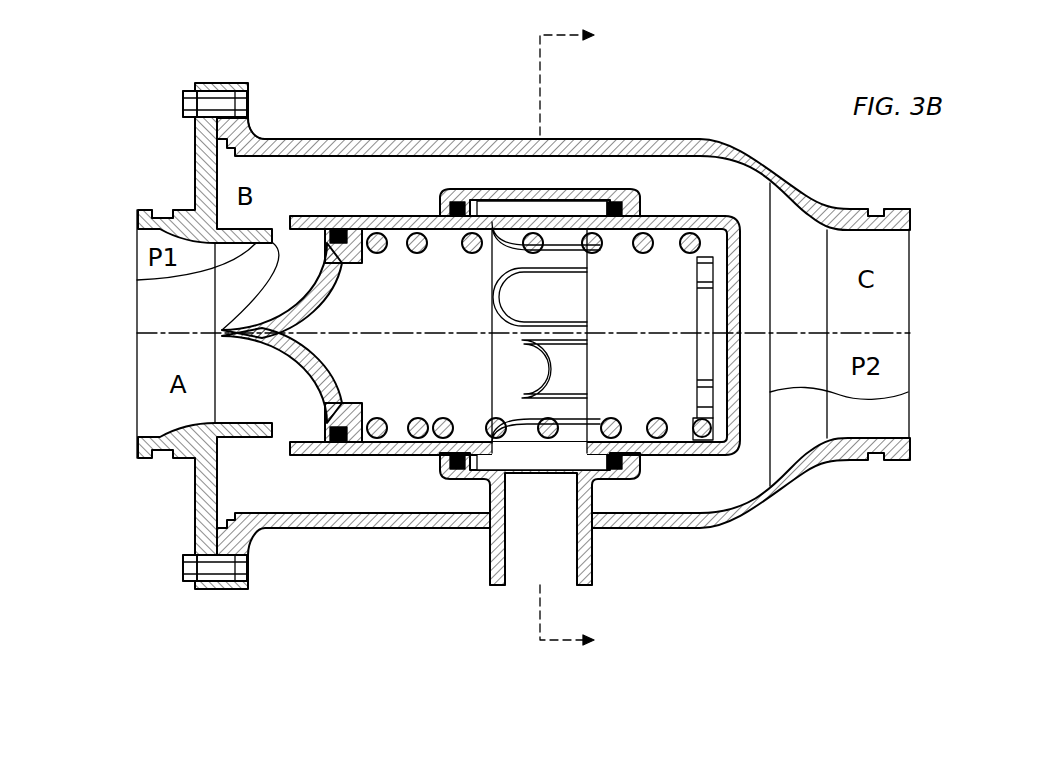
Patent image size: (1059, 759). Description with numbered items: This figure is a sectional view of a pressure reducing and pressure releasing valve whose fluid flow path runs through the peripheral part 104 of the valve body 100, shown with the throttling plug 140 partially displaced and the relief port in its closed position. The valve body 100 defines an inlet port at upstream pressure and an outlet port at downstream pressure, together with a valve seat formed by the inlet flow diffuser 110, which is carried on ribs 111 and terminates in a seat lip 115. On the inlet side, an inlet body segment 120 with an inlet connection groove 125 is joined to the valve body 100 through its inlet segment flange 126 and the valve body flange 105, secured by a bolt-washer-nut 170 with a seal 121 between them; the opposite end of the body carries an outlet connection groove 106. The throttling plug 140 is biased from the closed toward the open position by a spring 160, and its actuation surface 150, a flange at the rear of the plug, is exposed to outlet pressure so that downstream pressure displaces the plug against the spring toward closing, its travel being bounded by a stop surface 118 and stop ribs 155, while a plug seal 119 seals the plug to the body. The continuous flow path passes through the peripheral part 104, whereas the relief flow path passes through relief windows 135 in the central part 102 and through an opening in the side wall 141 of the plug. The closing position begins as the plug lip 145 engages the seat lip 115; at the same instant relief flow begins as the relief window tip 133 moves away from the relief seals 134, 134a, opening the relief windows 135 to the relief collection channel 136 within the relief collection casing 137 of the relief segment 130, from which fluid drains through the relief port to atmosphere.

The valve body 100 is at (598, 98).
The central part 102 is at (418, 298).
The peripheral part 104 is at (708, 186).
The valve body flange 105 is at (235, 90).
The outlet connection groove 106 is at (878, 208).
The inlet flow diffuser 110 is at (137, 279).
The ribs 111 is at (215, 373).
The seat lip 115 is at (300, 283).
The stop surface 118 is at (215, 483).
The plug seal 119 is at (338, 228).
The inlet body segment 120 is at (158, 517).
The seal 121 is at (250, 125).
The inlet connection groove 125 is at (165, 211).
The inlet segment flange 126 is at (195, 140).
The relief segment 130 is at (443, 588).
The relief window tip 133 is at (493, 222).
The relief seal 134 is at (457, 202).
The relief seal 134a is at (617, 202).
The relief windows 135 is at (539, 341).
The relief collection channel 136 is at (594, 470).
The relief collection casing 137 is at (467, 470).
The throttling plug 140 is at (670, 466).
The side wall 141 is at (396, 216).
The plug lip 145 is at (293, 217).
The actuation surface 150 is at (742, 258).
The stop ribs 155 is at (908, 392).
The spring 160 is at (441, 418).
The bolt-washer-nut 170 is at (184, 102).